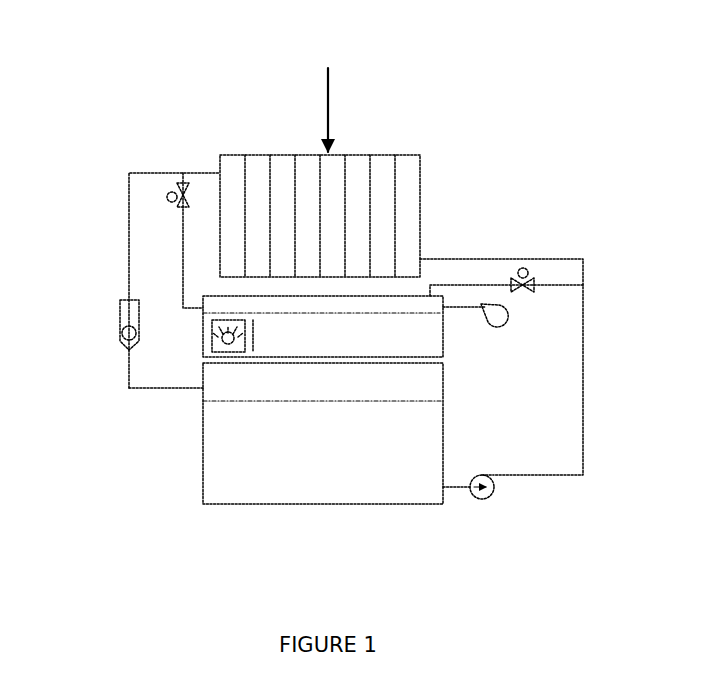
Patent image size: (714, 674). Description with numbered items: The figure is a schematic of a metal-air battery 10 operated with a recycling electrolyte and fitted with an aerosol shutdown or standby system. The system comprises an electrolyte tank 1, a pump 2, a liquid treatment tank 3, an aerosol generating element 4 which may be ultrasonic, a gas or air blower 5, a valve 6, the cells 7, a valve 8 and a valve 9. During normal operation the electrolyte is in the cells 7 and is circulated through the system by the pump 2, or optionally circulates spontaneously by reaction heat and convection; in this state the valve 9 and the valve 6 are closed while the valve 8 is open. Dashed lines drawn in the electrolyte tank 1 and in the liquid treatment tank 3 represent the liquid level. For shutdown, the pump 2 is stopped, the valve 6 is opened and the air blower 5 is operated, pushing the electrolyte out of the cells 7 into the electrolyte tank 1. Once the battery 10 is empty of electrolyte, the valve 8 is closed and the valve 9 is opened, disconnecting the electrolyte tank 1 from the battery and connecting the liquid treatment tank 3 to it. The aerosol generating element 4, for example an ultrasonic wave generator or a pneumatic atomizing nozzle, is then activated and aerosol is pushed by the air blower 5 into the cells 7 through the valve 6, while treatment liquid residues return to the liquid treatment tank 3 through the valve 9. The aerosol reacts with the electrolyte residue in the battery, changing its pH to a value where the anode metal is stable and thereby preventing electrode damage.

The electrolyte tank 1 is at (203, 497).
The pump 2 is at (497, 500).
The liquid treatment tank 3 is at (447, 343).
The aerosol generating element 4 is at (203, 352).
The air blower 5 is at (511, 323).
The valve 6 is at (170, 186).
The cells 7 is at (268, 155).
The valve 8 is at (121, 331).
The valve 9 is at (526, 268).
The metal-air battery 10 is at (328, 82).